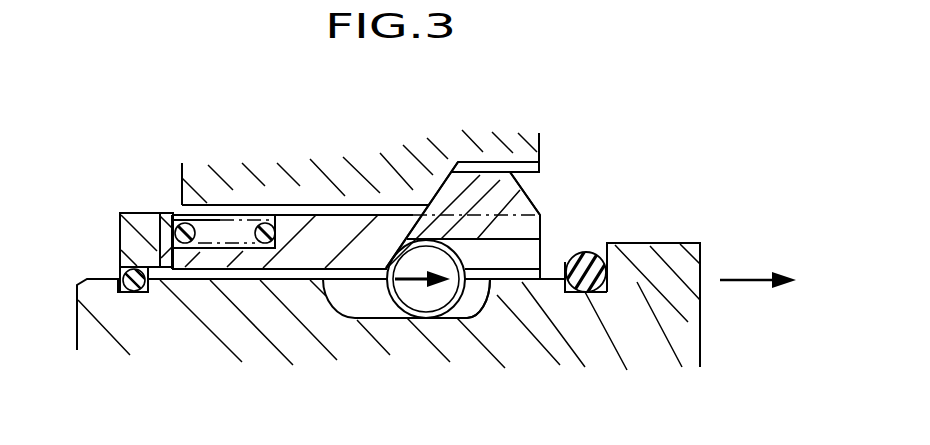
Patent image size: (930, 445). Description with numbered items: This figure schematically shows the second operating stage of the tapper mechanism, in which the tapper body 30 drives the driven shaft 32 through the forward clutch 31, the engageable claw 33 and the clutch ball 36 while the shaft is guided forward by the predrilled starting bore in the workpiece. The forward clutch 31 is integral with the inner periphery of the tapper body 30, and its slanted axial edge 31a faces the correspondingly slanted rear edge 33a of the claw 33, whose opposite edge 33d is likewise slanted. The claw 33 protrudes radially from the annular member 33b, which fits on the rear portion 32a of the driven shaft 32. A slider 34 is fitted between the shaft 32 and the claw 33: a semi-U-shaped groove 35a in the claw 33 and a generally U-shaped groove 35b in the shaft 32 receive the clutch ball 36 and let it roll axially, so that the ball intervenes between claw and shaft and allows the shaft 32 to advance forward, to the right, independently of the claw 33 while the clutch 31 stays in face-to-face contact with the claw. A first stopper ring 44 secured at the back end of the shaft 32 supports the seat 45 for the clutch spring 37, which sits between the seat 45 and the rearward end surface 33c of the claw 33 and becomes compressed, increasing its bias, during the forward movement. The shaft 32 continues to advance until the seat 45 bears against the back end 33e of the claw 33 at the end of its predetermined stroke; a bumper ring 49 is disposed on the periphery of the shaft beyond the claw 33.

The tapper body 30 is at (303, 169).
The forward clutch 31 is at (485, 160).
The axial edge of forward clutch 31a is at (512, 173).
The driven shaft 32 is at (665, 272).
The rear portion of driven shaft 32a is at (125, 315).
The engageable claw 33 is at (530, 184).
The axial edge of engageable claw 33a is at (440, 187).
The annular member 33b is at (543, 298).
The rearward end surface of engageable claw 33c is at (266, 216).
The axial edge of engageable claw 33d is at (530, 203).
The back end of engageable claw 33e is at (162, 213).
The slider 34 is at (462, 338).
The semi-U-shaped groove 35a is at (488, 252).
The generally U-shaped groove 35b is at (367, 297).
The clutch ball 36 is at (410, 288).
The clutch spring 37 is at (263, 246).
The first stopper ring 44 is at (120, 262).
The seat 45 is at (140, 230).
The bumper ring 49 is at (568, 257).